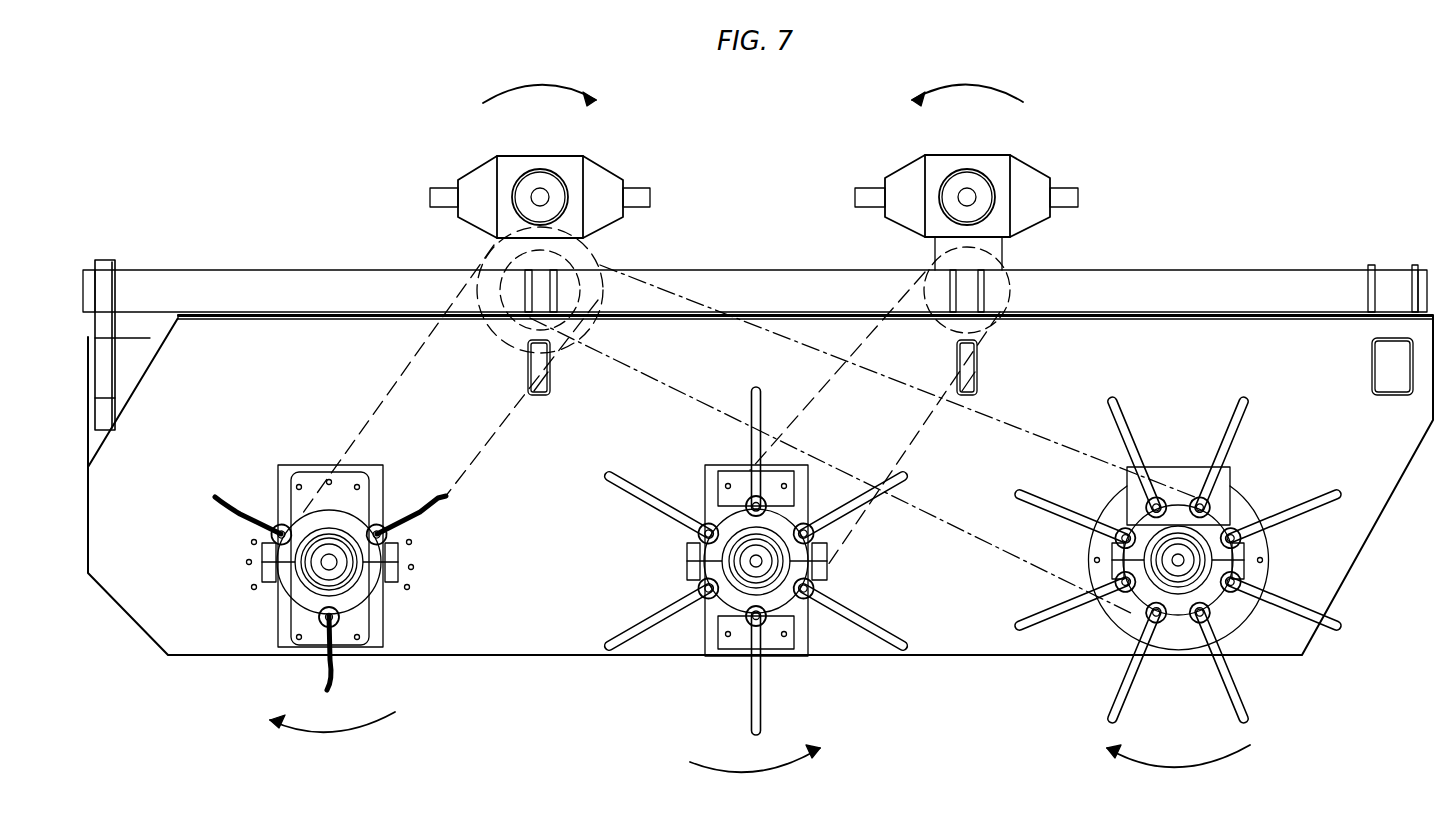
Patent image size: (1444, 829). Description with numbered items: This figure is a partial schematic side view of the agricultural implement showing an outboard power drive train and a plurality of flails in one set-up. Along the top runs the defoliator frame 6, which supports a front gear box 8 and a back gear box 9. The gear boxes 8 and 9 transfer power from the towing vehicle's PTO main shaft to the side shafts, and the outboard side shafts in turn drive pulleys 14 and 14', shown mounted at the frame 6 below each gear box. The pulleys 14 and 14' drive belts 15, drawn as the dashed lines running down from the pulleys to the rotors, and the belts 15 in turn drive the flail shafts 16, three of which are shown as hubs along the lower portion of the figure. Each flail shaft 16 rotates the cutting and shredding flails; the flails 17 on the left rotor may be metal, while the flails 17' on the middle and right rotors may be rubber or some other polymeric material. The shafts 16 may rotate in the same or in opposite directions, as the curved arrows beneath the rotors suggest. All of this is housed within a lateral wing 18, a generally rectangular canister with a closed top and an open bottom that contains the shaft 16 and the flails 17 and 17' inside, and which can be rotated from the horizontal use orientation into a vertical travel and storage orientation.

The defoliator frame 6 is at (245, 268).
The front gear box 8 is at (540, 155).
The back gear box 9 is at (967, 155).
The pulley 14 is at (563, 290).
The pulley 14' is at (993, 284).
The belt 15 is at (645, 388).
The flail shaft 16 is at (367, 617).
The flail 17 is at (330, 598).
The flail 17' is at (972, 561).
The lateral wing 18 is at (1182, 375).